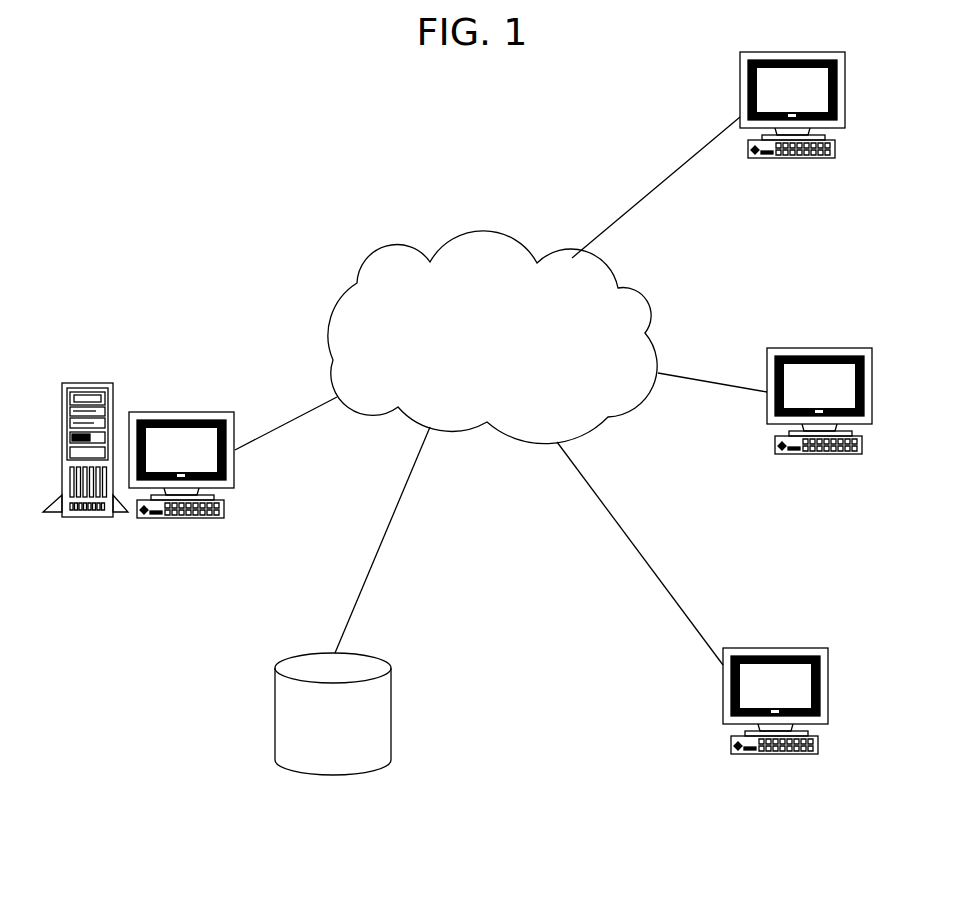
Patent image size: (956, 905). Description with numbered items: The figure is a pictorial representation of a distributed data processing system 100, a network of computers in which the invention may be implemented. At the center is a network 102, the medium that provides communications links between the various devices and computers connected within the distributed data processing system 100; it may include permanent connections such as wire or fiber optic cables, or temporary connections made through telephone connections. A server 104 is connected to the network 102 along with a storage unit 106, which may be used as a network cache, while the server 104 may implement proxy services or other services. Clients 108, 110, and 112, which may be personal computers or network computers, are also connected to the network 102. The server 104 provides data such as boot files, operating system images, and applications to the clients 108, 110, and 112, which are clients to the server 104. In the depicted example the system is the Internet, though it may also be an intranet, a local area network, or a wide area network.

The distributed data processing system 100 is at (504, 123).
The network 102 is at (509, 386).
The server 104 is at (197, 410).
The storage unit 106 is at (318, 653).
The client 108 is at (780, 52).
The client 110 is at (808, 348).
The client 112 is at (763, 648).